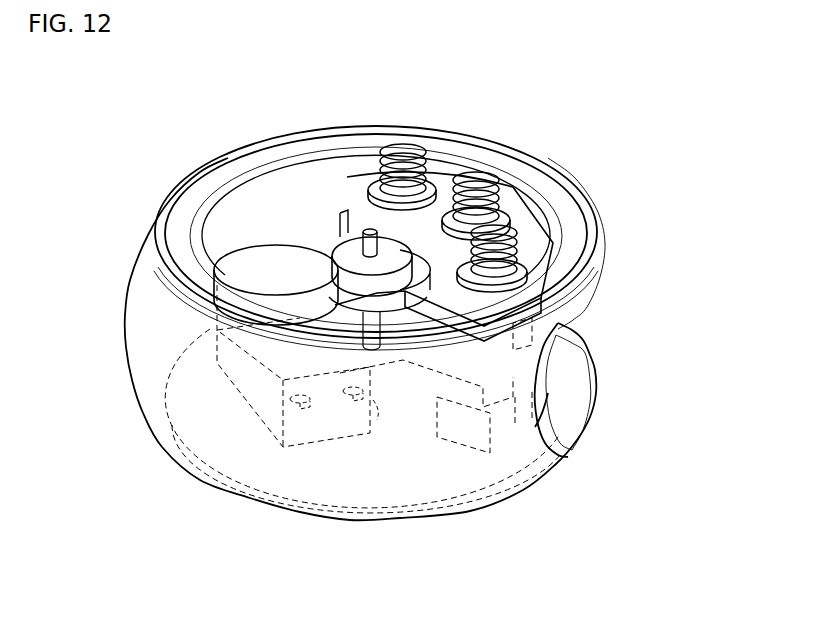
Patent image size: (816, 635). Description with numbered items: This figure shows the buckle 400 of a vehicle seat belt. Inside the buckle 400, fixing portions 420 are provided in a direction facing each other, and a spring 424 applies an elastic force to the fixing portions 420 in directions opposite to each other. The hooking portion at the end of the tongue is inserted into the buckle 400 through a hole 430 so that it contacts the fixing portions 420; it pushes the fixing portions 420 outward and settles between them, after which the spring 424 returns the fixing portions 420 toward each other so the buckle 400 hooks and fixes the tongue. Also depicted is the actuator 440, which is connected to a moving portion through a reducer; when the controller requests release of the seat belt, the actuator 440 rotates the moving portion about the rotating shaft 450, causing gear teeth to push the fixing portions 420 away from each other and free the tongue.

The buckle 400 is at (440, 518).
The fixing portions 420 is at (525, 243).
The spring 424 is at (403, 147).
The hole 430 is at (577, 326).
The actuator 440 is at (322, 425).
The rotating shaft 450 is at (351, 178).